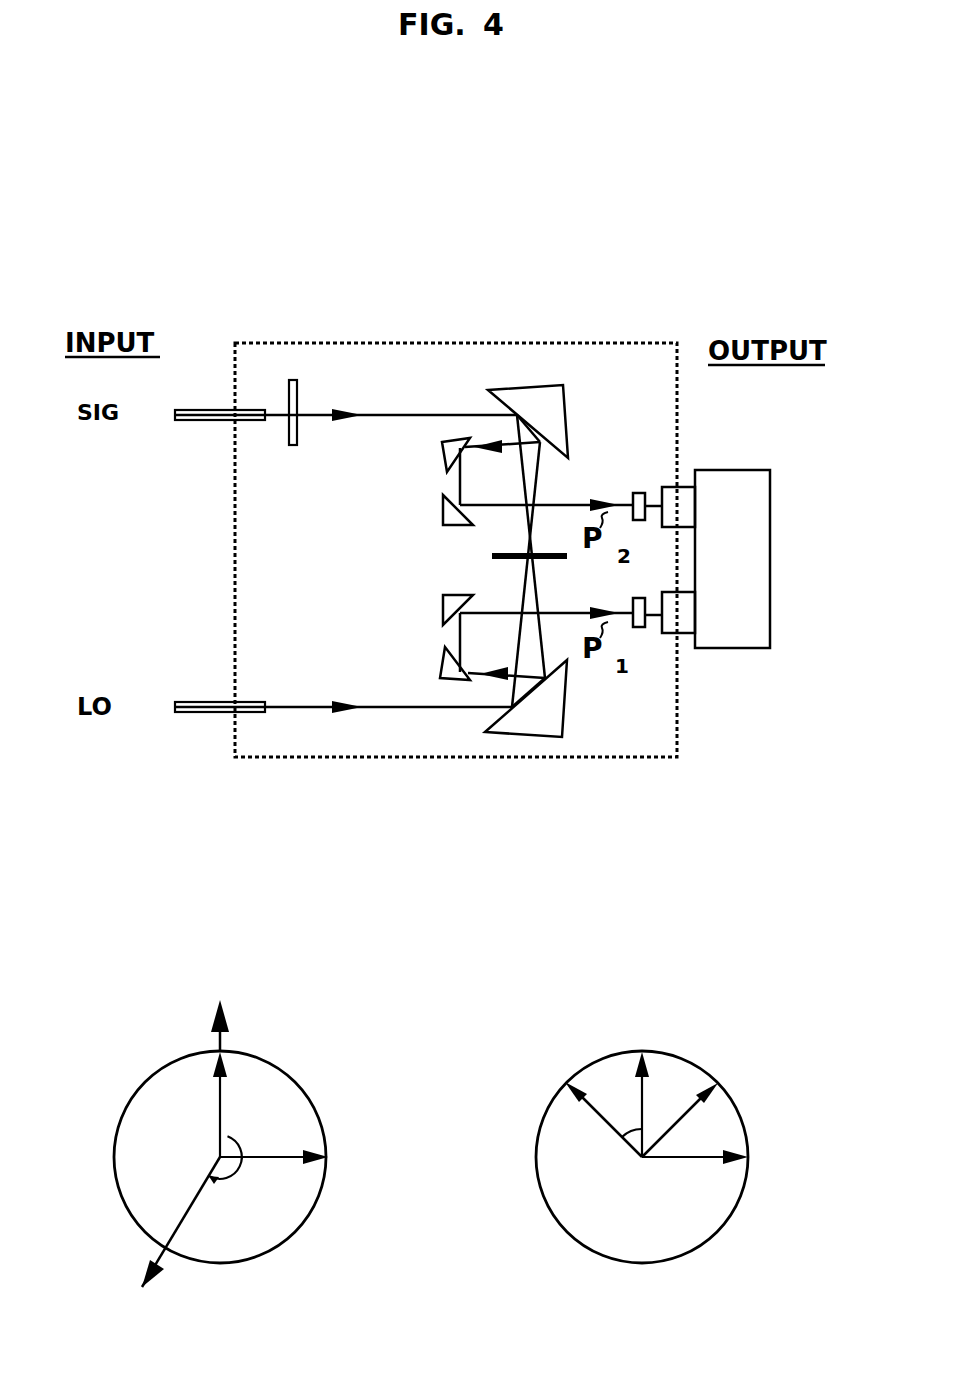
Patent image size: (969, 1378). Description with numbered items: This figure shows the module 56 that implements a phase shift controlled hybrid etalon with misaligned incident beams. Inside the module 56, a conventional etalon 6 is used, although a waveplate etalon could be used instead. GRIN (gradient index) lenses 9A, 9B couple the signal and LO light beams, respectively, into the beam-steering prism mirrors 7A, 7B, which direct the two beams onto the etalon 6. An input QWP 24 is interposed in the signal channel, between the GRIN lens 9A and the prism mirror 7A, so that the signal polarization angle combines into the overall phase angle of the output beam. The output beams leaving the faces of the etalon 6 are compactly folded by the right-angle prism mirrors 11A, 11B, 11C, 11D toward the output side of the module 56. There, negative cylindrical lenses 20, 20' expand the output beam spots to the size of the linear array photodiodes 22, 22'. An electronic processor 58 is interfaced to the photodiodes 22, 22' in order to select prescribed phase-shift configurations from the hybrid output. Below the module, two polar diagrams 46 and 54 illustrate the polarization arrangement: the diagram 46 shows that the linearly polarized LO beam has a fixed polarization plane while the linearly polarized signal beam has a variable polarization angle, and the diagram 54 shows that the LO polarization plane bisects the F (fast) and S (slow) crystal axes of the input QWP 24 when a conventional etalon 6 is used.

The GRIN lens 9A is at (204, 420).
The GRIN lens 9B is at (200, 702).
The input QWP 24 is at (293, 445).
The beam-steering prism mirror 7A is at (568, 400).
The beam-steering prism mirror 7B is at (567, 706).
The right-angle prism mirror 11A is at (442, 445).
The right-angle prism mirror 11B is at (440, 666).
The right-angle prism mirror 11C is at (443, 605).
The right-angle prism mirror 11D is at (443, 510).
The etalon 6 is at (492, 557).
The negative cylindrical lens 20 is at (687, 458).
The negative cylindrical lens 20' is at (690, 666).
The linear array photodiode 22 is at (703, 479).
The linear array photodiode 22' is at (707, 644).
The electronic processor 58 is at (770, 560).
The module 56 is at (427, 757).
The polar diagram 46 is at (127, 1210).
The polar diagram 54 is at (553, 1210).